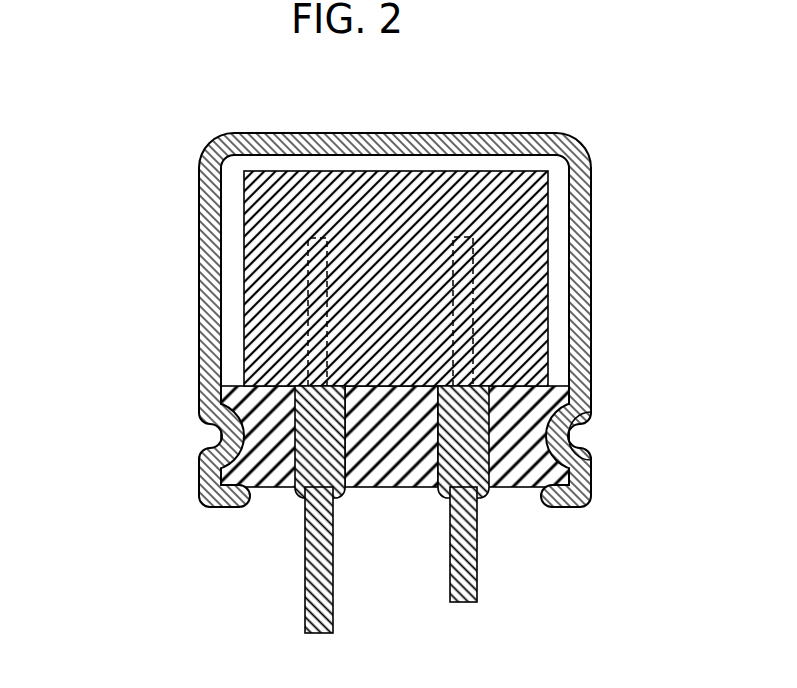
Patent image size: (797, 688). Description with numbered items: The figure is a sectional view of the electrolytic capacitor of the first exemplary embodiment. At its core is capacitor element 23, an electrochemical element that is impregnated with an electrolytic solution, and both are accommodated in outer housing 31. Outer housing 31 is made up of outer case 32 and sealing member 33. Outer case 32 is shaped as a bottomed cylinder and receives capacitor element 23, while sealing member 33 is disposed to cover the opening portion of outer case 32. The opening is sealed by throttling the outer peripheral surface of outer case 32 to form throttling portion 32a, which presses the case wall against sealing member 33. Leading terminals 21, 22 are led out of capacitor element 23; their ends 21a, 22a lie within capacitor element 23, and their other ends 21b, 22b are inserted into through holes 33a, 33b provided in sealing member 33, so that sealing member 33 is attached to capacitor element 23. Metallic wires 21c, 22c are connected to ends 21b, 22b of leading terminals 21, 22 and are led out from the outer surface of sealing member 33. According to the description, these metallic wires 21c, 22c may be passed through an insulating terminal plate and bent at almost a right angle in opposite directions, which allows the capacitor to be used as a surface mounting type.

The leading terminal 21 is at (189, 435).
The end of leading terminal 21a is at (322, 281).
The other end of leading terminal 21b is at (293, 470).
The metallic wire 21c is at (305, 559).
The leading terminal 22 is at (601, 431).
The end of leading terminal 22a is at (467, 297).
The other end of leading terminal 22b is at (510, 487).
The metallic wire 22c is at (477, 567).
The capacitor element 23 is at (432, 172).
The outer housing 31 is at (483, 375).
The outer case 32 is at (584, 248).
The throttling portion 32a is at (580, 428).
The sealing member 33 is at (558, 387).
The through hole 33a is at (346, 452).
The through hole 33b is at (435, 438).